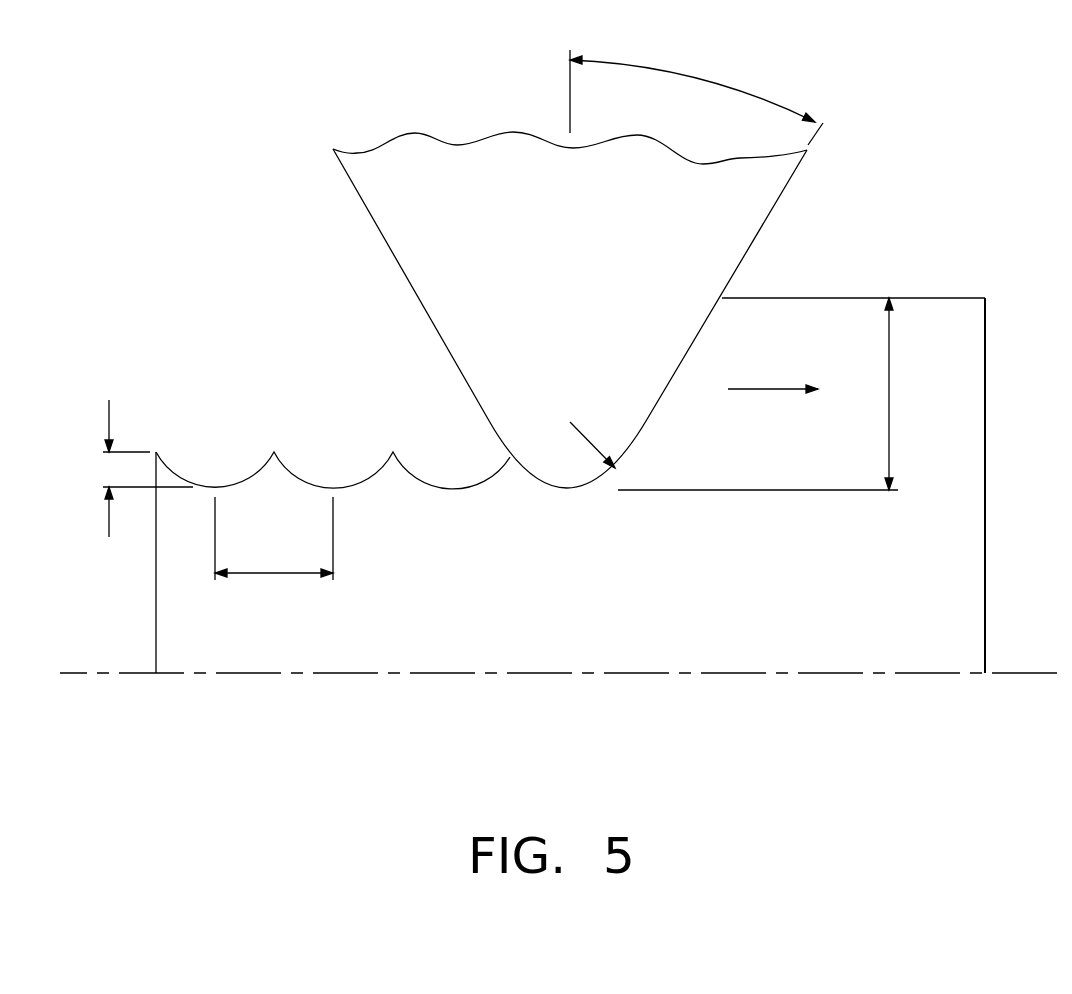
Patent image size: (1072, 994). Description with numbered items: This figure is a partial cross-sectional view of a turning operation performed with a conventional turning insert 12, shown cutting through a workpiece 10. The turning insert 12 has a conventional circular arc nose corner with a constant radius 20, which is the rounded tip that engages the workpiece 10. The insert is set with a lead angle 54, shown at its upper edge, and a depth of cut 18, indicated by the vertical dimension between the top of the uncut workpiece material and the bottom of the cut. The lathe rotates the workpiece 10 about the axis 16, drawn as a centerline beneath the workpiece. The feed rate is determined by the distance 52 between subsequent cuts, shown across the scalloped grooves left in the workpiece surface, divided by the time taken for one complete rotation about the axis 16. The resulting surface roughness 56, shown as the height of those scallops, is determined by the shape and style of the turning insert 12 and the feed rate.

The workpiece 10 is at (583, 600).
The turning insert 12 is at (578, 283).
The axis 16 is at (348, 673).
The depth of cut 18 is at (889, 433).
The constant radius 20 is at (585, 435).
The distance between subsequent cuts 52 is at (278, 573).
The lead angle 54 is at (738, 88).
The surface roughness 56 is at (109, 412).